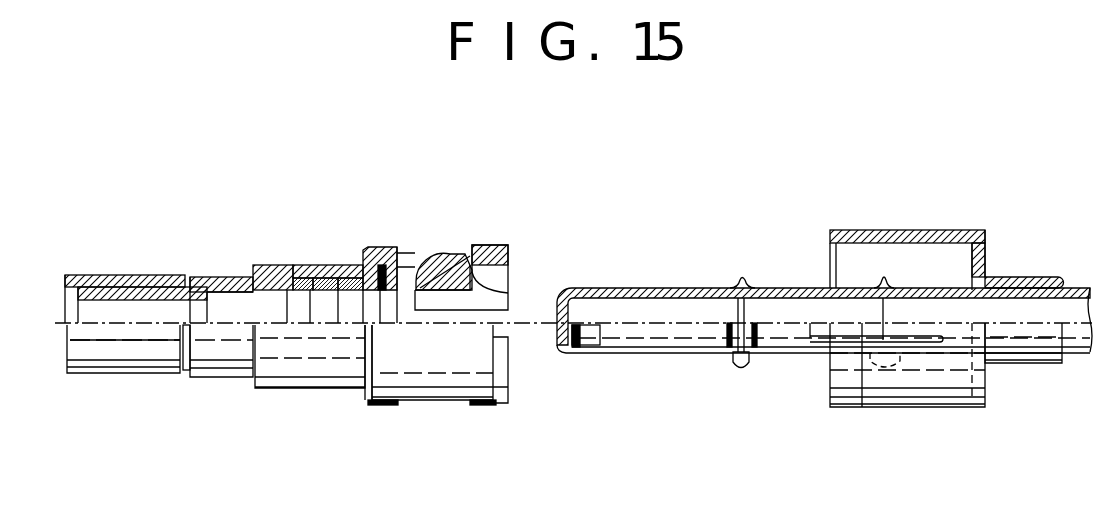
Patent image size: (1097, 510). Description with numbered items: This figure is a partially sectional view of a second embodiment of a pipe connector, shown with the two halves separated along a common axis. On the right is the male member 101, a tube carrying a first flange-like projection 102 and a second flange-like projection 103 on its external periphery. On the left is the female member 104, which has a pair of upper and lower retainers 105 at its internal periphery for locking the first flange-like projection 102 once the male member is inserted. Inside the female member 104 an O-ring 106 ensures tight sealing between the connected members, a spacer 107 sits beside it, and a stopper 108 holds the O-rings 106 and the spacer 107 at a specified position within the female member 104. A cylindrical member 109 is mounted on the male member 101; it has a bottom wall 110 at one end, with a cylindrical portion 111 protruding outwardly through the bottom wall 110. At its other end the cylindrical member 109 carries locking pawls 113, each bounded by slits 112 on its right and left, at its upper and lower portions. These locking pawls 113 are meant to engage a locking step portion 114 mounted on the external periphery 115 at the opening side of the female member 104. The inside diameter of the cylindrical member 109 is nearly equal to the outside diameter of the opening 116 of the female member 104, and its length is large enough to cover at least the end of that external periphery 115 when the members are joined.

The male member 101 is at (778, 290).
The first flange-like projection 102 is at (727, 343).
The second flange-like projection 103 is at (883, 277).
The female member 104 is at (281, 370).
The retainer 105 is at (448, 267).
The O-ring 106 is at (320, 263).
The spacer 107 is at (308, 280).
The stopper 108 is at (347, 263).
The cylindrical member 109 is at (937, 230).
The bottom wall 110 is at (988, 253).
The cylindrical portion 111 is at (1050, 277).
The slit 112 is at (862, 405).
The locking pawl 113 is at (817, 340).
The locking step portion 114 is at (360, 253).
The external periphery 115 is at (433, 380).
The opening 116 is at (513, 330).